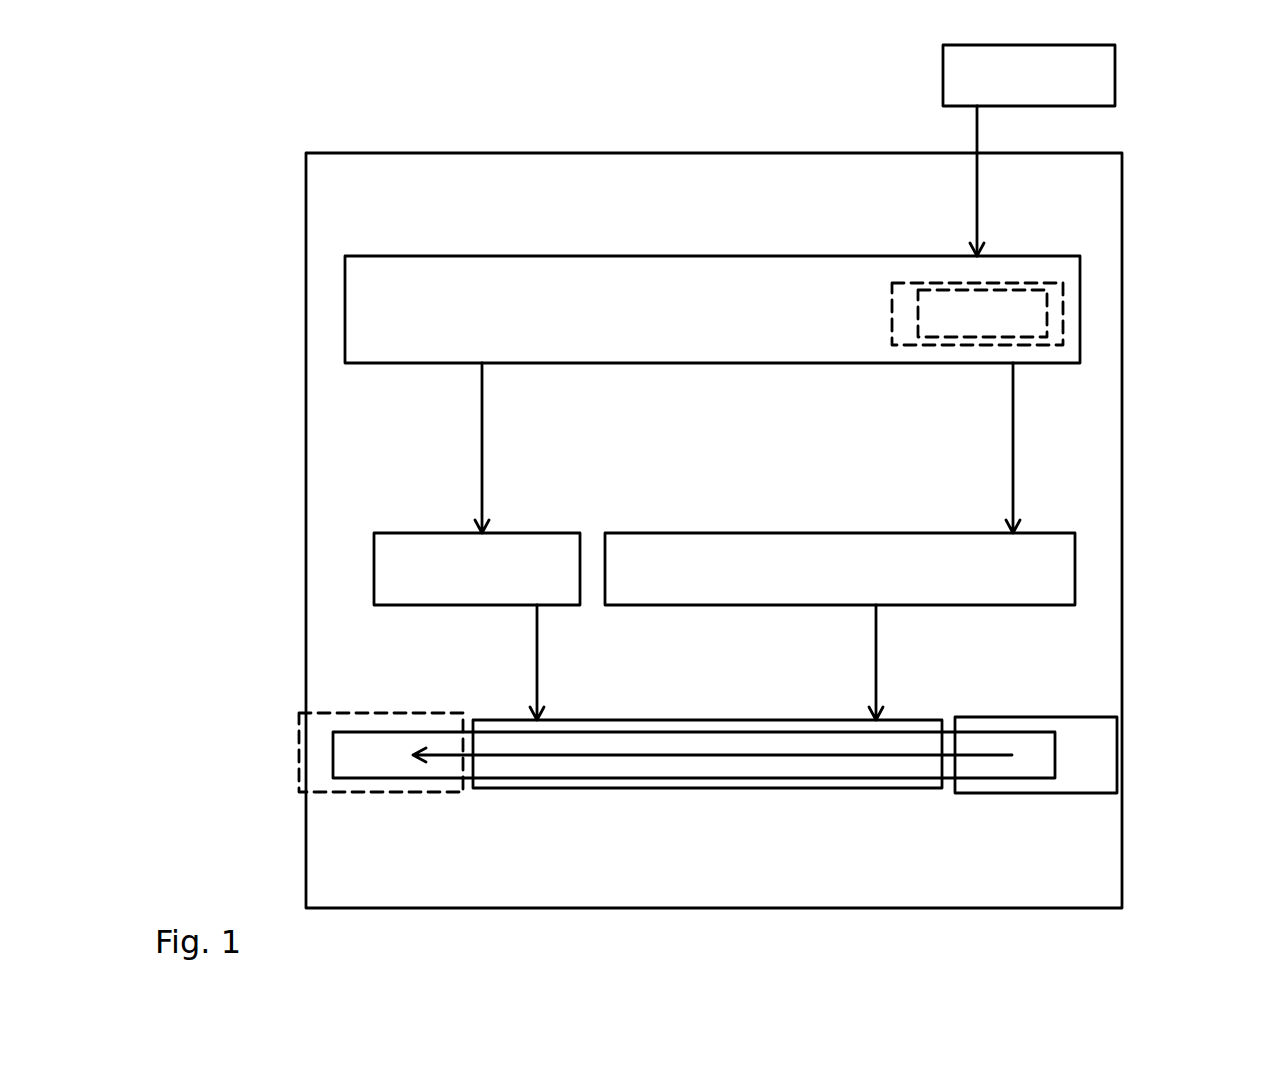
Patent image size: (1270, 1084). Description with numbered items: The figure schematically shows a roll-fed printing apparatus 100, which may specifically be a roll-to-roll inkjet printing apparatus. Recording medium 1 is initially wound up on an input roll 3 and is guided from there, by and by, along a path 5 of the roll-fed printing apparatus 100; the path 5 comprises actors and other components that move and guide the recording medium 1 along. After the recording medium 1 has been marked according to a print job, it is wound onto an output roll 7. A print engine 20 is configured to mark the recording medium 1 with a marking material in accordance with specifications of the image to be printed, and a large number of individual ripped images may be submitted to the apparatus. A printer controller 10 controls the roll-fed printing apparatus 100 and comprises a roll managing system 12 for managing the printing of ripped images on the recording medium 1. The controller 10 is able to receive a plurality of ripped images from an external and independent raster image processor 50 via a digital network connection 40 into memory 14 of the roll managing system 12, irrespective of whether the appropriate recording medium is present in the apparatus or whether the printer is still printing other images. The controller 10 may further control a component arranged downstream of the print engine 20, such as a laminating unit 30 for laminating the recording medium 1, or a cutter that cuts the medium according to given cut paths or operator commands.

The roll-fed printing apparatus 100 is at (306, 285).
The controller 10 is at (446, 366).
The roll managing system 12 is at (913, 290).
The memory 14 is at (1022, 307).
The digital network connection 40 is at (977, 138).
The raster image processor 50 is at (1116, 69).
The laminating unit 30 is at (472, 606).
The print engine 20 is at (1025, 607).
The path 5 is at (715, 793).
The output roll 7 is at (437, 795).
The recording medium 1 is at (382, 792).
The input roll 3 is at (1055, 795).